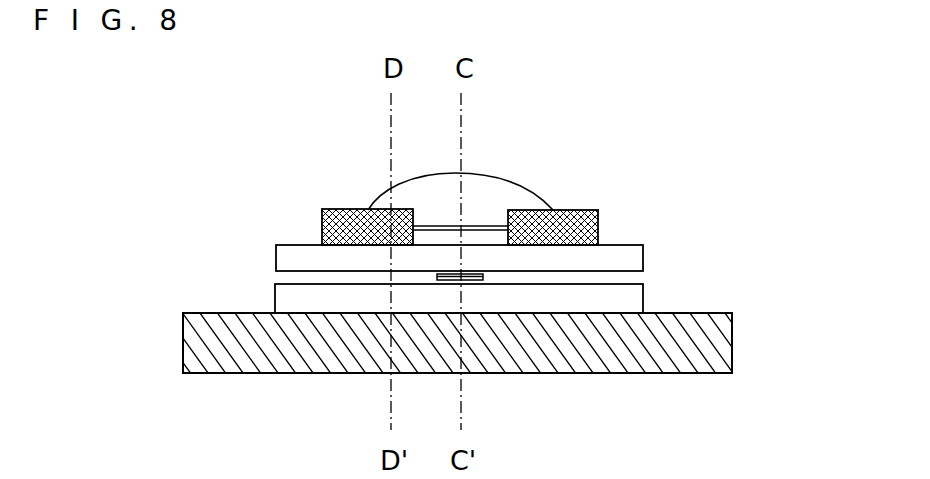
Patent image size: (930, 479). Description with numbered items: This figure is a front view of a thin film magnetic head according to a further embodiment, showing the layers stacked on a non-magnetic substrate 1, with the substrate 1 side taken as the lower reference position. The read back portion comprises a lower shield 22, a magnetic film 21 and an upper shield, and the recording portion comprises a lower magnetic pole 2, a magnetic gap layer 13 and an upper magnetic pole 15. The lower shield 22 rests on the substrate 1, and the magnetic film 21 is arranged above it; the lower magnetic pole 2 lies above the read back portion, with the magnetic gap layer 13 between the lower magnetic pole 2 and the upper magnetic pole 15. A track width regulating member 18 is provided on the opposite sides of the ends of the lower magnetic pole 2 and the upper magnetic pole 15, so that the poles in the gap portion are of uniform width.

The non-magnetic substrate 1 is at (712, 337).
The lower magnetic pole 2 is at (622, 256).
The magnetic gap layer 13 is at (452, 226).
The upper magnetic pole 15 is at (486, 202).
The track width regulating member 18 is at (597, 222).
The magnetic film 21 is at (444, 274).
The lower shield 22 is at (622, 301).